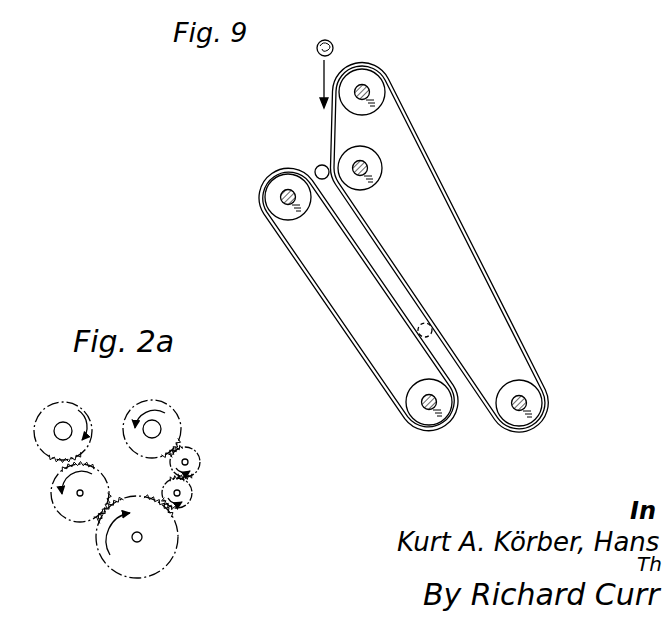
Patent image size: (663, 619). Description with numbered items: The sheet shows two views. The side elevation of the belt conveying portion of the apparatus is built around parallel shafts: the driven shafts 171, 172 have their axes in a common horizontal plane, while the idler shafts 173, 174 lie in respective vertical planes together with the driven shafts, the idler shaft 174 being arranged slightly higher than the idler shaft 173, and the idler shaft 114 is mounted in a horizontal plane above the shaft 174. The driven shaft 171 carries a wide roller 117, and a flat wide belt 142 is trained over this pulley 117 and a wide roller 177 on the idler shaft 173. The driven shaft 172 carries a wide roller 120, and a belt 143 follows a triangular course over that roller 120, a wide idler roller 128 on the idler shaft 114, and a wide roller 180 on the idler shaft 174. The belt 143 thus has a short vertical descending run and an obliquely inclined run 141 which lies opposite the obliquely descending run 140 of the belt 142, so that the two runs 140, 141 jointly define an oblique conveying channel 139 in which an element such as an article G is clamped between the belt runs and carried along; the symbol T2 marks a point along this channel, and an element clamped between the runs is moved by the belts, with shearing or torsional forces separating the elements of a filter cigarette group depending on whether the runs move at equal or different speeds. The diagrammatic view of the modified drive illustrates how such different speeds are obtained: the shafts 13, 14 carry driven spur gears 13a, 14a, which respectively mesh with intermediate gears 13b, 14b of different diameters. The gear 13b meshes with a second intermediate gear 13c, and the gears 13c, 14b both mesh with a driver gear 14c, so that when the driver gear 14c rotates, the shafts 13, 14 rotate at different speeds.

In FIG. 9, the wide idler roller 128 is at (372, 78).
In FIG. 9, the idler shaft 114 is at (370, 90).
In FIG. 9, the wide roller 180 is at (372, 160).
In FIG. 9, the idler shaft 174 is at (367, 177).
In FIG. 9, the wide roller 177 is at (273, 205).
In FIG. 9, the idler shaft 173 is at (285, 205).
In FIG. 9, the wide roller 117 is at (407, 410).
In FIG. 9, the driven shaft 171 is at (430, 410).
In FIG. 9, the driven shaft 172 is at (532, 408).
In FIG. 9, the wide roller 120 is at (517, 423).
In FIG. 9, the belt 143 is at (477, 276).
In FIG. 9, the obliquely inclined run 141 is at (388, 248).
In FIG. 9, the obliquely descending run 140 is at (374, 274).
In FIG. 9, the oblique conveying channel 139 is at (408, 303).
In FIG. 9, the flat wide belt 142 is at (353, 347).
In FIG. 9, the article (filter rod) being conveyed G is at (334, 54).
In FIG. 9, the transfer point T2 is at (430, 327).
In FIG. 2A, the shaft 14 is at (62, 423).
In FIG. 2A, the driven spur gear 14a is at (78, 400).
In FIG. 2A, the intermediate gear 14b is at (70, 512).
In FIG. 2A, the driver gear 14c is at (120, 566).
In FIG. 2A, the shaft 13 is at (154, 428).
In FIG. 2A, the driven spur gear 13a is at (135, 402).
In FIG. 2A, the intermediate gear 13b is at (193, 459).
In FIG. 2A, the second intermediate gear 13c is at (183, 493).